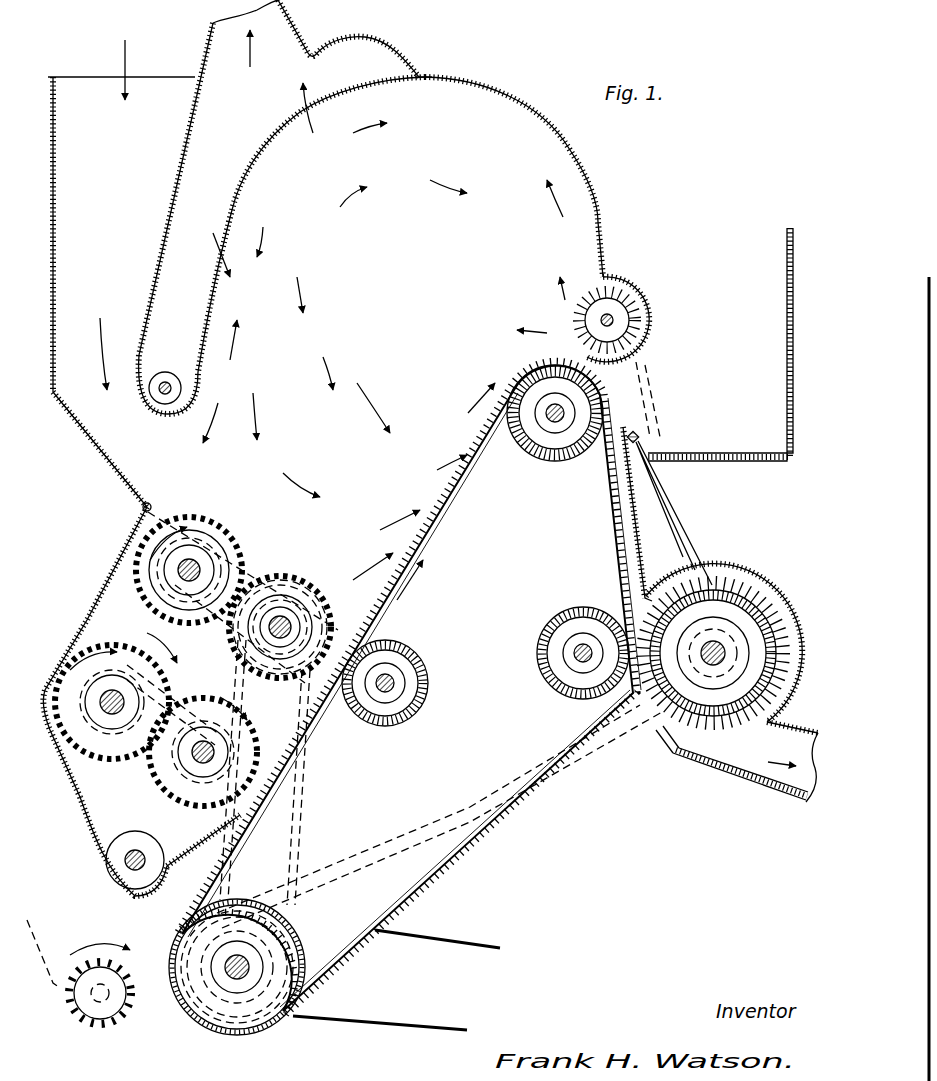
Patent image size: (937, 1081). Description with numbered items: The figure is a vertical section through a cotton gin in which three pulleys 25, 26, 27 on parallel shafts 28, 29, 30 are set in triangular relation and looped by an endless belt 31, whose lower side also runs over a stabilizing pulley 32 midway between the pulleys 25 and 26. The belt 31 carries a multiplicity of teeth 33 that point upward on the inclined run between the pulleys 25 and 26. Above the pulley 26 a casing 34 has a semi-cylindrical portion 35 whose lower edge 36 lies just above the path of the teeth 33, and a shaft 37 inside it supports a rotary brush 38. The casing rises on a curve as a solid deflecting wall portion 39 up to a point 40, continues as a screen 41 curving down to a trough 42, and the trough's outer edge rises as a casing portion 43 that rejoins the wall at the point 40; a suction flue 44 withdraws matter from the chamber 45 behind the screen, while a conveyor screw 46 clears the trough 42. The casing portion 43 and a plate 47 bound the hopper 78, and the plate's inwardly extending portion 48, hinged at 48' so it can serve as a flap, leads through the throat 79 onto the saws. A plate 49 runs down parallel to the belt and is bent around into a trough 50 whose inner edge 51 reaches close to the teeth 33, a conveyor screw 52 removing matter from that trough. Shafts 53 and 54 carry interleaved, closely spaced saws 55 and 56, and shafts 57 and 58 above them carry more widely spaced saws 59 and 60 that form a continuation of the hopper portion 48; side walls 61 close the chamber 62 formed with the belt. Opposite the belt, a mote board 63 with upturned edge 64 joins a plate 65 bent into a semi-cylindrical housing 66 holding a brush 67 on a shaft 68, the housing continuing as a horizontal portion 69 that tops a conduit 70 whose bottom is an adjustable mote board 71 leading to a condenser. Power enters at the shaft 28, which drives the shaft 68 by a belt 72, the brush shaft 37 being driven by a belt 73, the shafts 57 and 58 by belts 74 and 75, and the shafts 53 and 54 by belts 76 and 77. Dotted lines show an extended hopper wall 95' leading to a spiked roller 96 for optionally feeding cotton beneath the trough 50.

The pulley 25 is at (288, 917).
The pulley 26 is at (523, 449).
The pulley 27 is at (560, 607).
The shaft 28 is at (240, 975).
The shaft 29 is at (558, 424).
The shaft 30 is at (560, 653).
The endless belt 31 is at (318, 721).
The pulley 32 is at (399, 727).
The teeth 33 is at (301, 748).
The casing 34 is at (513, 104).
The semi-cylindrical casing portion 35 is at (648, 300).
The lower edge 36 is at (567, 352).
The shaft 37 is at (611, 308).
The rotary brush 38 is at (650, 341).
The deflecting wall portion 39 is at (537, 130).
The point 40 is at (424, 78).
The screen 41 is at (275, 145).
The trough 42 is at (190, 386).
The casing portion 43 is at (160, 252).
The suction flue 44 is at (302, 38).
The chamber 45 is at (311, 224).
The conveyor screw 46 is at (178, 374).
The plate 47 is at (58, 207).
The inwardly extending portion 48 is at (100, 449).
The hinge axis 48' is at (128, 516).
The plate 49 is at (113, 598).
The trough 50 is at (143, 893).
The extended edge 51 is at (200, 840).
The conveyor screw 52 is at (110, 851).
The shaft 53 is at (107, 711).
The shaft 54 is at (193, 753).
The saws 55 is at (130, 650).
The saws 56 is at (163, 750).
The shaft 57 is at (193, 560).
The shaft 58 is at (287, 617).
The saws 59 is at (217, 548).
The saws 60 is at (327, 597).
The side walls 61 is at (80, 88).
The chamber 62 is at (303, 383).
The mote board 63 is at (704, 452).
The upturned edge 64 is at (639, 438).
The plate 65 is at (642, 522).
The semi-cylindrical housing 66 is at (730, 563).
The brush 67 is at (722, 650).
The shaft 68 is at (768, 601).
The horizontally extending portion 69 is at (792, 749).
The conduit 70 is at (745, 757).
The mote board 71 is at (665, 757).
The belt 72 is at (596, 745).
The belt 73 is at (691, 531).
The belt 74 is at (297, 811).
The belt 75 is at (254, 572).
The belt 76 is at (222, 655).
The belt 77 is at (214, 770).
The hopper 78 is at (96, 333).
The throat 79 is at (123, 453).
The extended hopper wall 95' is at (78, 693).
The spiked roller 96 is at (103, 1002).